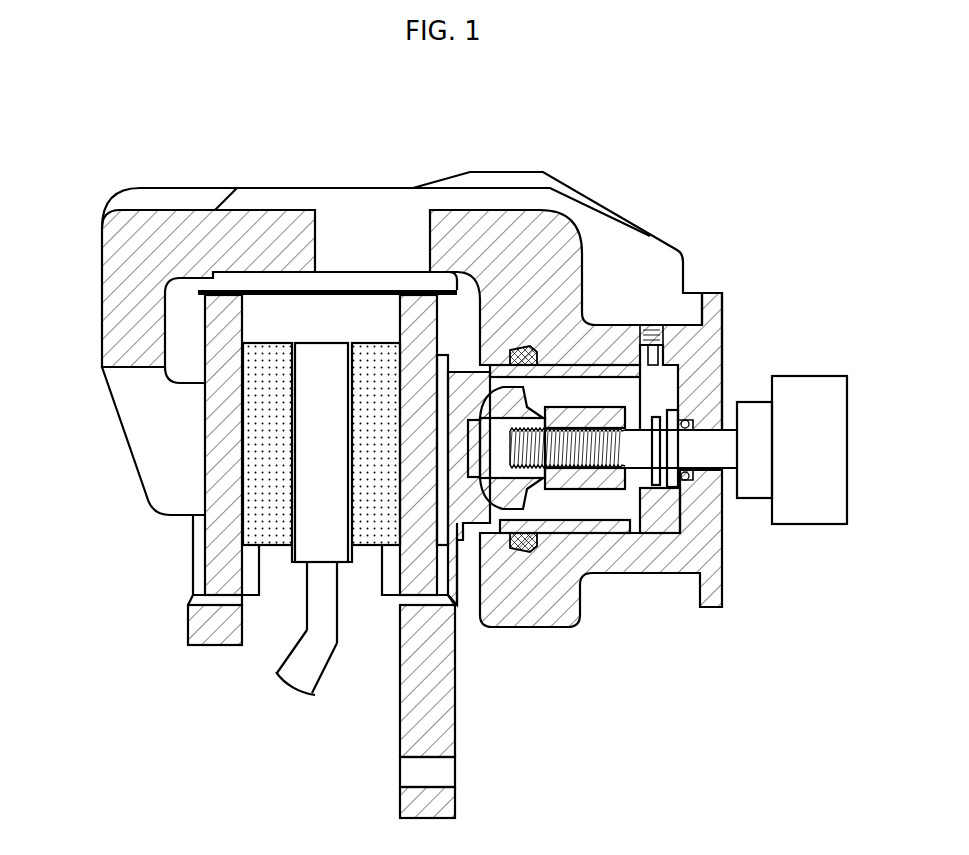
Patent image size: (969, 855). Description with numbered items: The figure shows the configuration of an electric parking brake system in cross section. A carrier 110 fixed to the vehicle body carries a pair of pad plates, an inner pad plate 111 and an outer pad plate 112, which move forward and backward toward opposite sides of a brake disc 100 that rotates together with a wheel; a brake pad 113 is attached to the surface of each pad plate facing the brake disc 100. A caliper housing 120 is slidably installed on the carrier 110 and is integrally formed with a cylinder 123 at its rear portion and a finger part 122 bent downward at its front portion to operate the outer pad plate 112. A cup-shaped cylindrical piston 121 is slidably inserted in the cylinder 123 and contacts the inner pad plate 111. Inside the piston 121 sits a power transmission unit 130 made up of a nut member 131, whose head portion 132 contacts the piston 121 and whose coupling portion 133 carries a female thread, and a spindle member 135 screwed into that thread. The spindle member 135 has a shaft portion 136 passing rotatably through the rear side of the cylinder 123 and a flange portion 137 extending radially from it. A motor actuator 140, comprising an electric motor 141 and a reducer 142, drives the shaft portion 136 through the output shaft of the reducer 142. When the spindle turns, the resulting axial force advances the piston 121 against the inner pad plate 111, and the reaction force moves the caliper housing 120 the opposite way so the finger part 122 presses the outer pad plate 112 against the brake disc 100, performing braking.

The brake disc 100 is at (308, 663).
The carrier 110 is at (410, 741).
The inner pad plate 111 is at (401, 603).
The outer pad plate 112 is at (215, 543).
The brake pad 113 is at (273, 545).
The caliper housing 120 is at (305, 198).
The piston 121 is at (455, 508).
The finger part 122 is at (132, 420).
The cylinder 123 is at (712, 293).
The power transmission unit 130 is at (592, 380).
The nut member 131 is at (542, 582).
The head portion 132 is at (507, 503).
The coupling portion 133 is at (578, 483).
The spindle member 135 is at (691, 576).
The shaft portion 136 is at (683, 477).
The flange portion 137 is at (650, 477).
The motor actuator 140 is at (786, 402).
The electric motor 141 is at (798, 383).
The reducer 142 is at (760, 405).